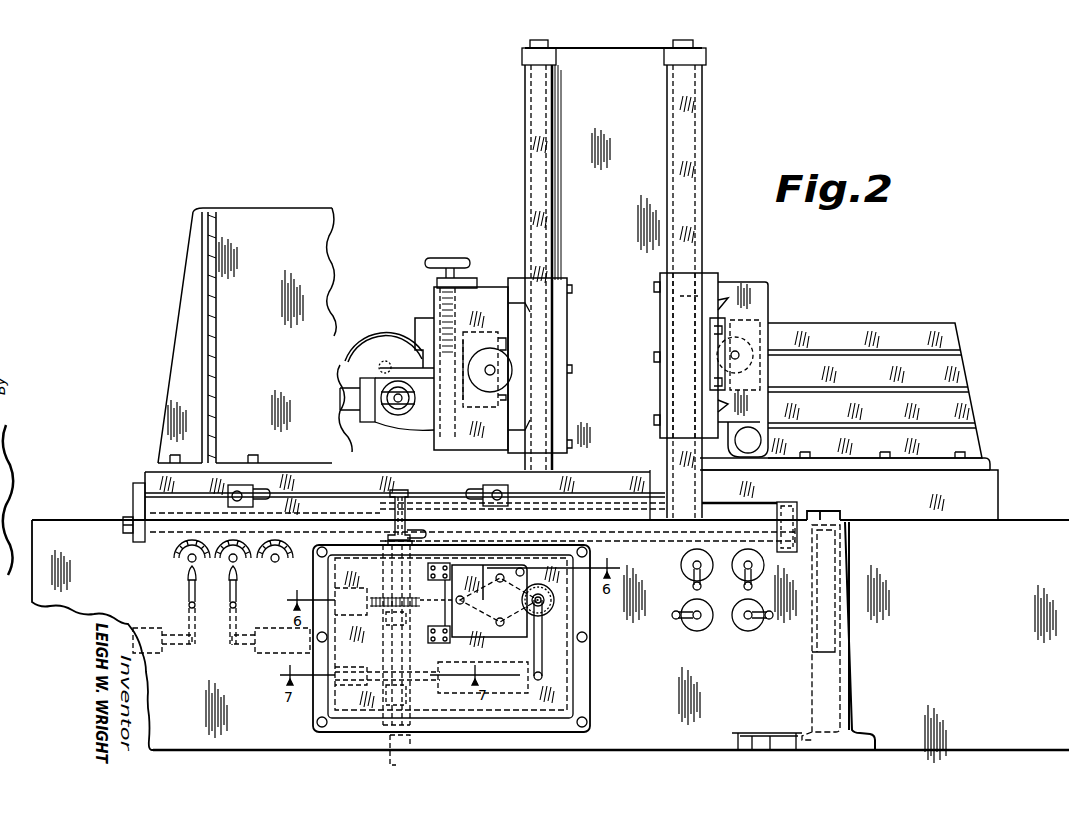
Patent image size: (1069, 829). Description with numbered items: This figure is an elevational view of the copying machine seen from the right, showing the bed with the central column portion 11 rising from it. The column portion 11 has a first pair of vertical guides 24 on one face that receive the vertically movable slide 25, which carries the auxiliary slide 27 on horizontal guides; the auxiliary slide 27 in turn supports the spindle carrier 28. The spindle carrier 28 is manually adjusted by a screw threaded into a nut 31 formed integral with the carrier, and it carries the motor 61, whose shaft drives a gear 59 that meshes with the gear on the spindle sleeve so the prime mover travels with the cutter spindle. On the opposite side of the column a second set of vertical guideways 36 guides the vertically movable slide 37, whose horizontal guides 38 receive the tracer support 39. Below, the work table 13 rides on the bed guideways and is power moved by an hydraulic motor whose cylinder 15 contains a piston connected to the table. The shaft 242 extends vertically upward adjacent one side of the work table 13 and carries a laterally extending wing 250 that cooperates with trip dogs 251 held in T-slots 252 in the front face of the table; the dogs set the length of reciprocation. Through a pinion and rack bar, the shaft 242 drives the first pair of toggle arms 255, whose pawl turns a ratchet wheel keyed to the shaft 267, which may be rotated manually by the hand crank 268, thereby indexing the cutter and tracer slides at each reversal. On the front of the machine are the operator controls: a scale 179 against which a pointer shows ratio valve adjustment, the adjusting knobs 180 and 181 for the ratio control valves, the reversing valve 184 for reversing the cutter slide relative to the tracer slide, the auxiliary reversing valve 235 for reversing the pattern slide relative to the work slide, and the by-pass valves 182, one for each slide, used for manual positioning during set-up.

The column portion 11 is at (607, 72).
The first pair of vertical guides 24 is at (523, 101).
The second set of vertical guideways 36 is at (700, 108).
The vertically movable slide 25 is at (514, 280).
The auxiliary slide 27 is at (500, 290).
The nut 31 is at (462, 315).
The spindle carrier 28 is at (432, 318).
The motor 61 is at (400, 345).
The gear 59 is at (375, 360).
The vertically movable slide 37 is at (705, 285).
The horizontal guides 38 is at (728, 303).
The tracer support 39 is at (760, 302).
The work table 13 is at (152, 474).
The T-slots 252 is at (135, 501).
The trip dogs 251 is at (265, 488).
The laterally extending wing 250 is at (395, 488).
The cylinder 15 is at (775, 542).
The scale 179 is at (175, 555).
The adjusting knob 180 is at (234, 564).
The adjusting knob 181 is at (272, 564).
The reversing valve 184 is at (149, 628).
The auxiliary reversing valve 235 is at (268, 628).
The shaft 242 is at (402, 655).
The first pair of toggle arms 255 is at (490, 572).
The shaft 267 is at (553, 600).
The hand crank 268 is at (545, 661).
The by-pass valve 182 is at (738, 605).